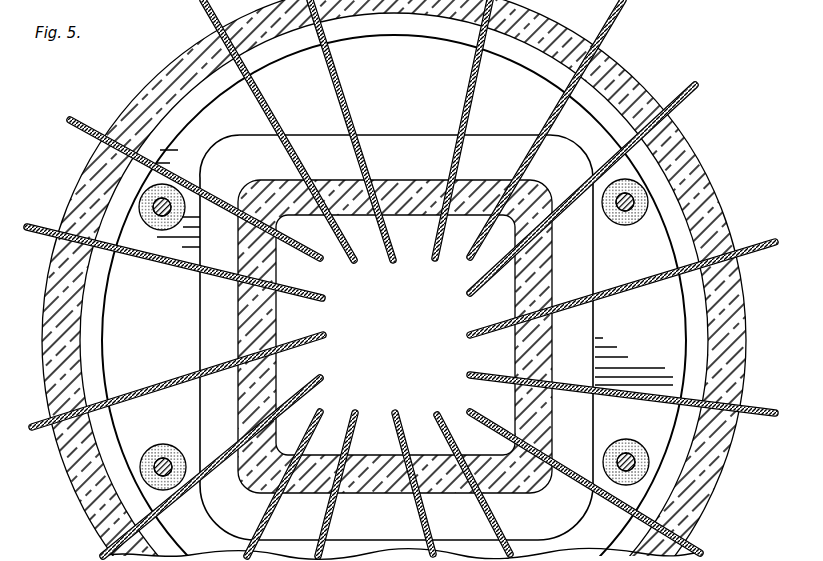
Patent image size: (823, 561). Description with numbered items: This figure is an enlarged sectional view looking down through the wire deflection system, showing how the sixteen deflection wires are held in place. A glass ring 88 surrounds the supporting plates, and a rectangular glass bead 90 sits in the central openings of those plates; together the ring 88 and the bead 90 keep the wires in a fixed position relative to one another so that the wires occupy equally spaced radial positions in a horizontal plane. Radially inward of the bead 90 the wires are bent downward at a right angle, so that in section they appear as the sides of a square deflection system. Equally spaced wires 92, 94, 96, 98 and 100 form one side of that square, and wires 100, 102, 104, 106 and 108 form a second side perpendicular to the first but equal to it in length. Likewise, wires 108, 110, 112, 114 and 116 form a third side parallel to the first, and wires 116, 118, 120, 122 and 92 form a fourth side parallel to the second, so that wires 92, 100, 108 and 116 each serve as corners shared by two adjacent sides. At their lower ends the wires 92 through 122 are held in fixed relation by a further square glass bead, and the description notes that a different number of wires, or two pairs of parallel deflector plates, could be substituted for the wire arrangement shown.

The glass ring 88 is at (640, 82).
The rectangular glass bead 90 is at (545, 277).
The wire 92 is at (322, 410).
The wire 94 is at (322, 376).
The wire 96 is at (325, 336).
The wire 98 is at (323, 300).
The wire 100 is at (322, 262).
The wire 102 is at (353, 263).
The wire 104 is at (393, 263).
The wire 106 is at (435, 261).
The wire 108 is at (470, 262).
The wire 110 is at (469, 295).
The wire 112 is at (470, 335).
The wire 114 is at (470, 373).
The wire 116 is at (470, 410).
The wire 118 is at (434, 413).
The wire 120 is at (412, 398).
The wire 122 is at (364, 389).